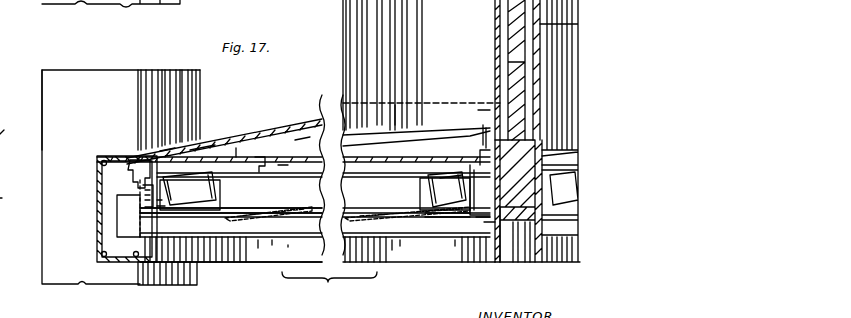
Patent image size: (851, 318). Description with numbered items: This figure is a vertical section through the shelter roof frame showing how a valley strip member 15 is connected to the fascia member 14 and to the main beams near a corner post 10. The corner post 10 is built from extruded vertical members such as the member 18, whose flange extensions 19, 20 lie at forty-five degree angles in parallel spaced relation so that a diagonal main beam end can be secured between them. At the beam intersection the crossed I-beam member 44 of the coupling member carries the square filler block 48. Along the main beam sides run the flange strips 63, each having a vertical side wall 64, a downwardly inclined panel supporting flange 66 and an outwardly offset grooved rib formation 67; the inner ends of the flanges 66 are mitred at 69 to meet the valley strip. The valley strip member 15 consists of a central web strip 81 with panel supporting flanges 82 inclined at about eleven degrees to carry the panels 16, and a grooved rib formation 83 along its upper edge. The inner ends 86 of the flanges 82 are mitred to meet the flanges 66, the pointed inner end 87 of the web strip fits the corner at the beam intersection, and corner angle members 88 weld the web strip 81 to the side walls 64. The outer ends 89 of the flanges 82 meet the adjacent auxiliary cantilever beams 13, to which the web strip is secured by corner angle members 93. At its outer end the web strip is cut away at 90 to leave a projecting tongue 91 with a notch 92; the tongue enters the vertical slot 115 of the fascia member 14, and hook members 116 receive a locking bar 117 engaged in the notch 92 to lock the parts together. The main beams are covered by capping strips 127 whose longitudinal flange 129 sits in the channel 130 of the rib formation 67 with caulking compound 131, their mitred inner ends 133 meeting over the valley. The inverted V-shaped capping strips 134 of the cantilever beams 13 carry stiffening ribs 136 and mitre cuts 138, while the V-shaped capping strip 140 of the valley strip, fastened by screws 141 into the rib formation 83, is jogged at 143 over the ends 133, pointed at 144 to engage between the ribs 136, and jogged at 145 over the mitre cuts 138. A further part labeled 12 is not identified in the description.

The corner post 10 is at (32, 75).
The column 12 is at (489, 15).
The auxiliary cantilever beam 13 is at (222, 275).
The fascia member 14 is at (84, 215).
The valley strip member 15 is at (258, 262).
The panel 16 is at (8, 122).
The extruded vertical member 18 is at (83, 70).
The flange extension 19 is at (186, 70).
The flange extension 20 is at (154, 70).
The I-beam member 44 is at (512, 80).
The square filler block 48 is at (523, 228).
The flange strip 63 is at (465, 228).
The vertical side wall 64 is at (462, 186).
The panel supporting flange 66 is at (478, 232).
The grooved rib formation 67 is at (467, 200).
The mitred inner end 69 is at (444, 220).
The central web strip 81 is at (395, 232).
The panel supporting flange 82 is at (290, 213).
The longitudinally grooved rib formation 83 is at (303, 138).
The inner end of flange 86 is at (420, 204).
The inner end of web strip lower margin 87 is at (486, 222).
The corner angle member 88 is at (427, 191).
The outer end of flange 89 is at (251, 215).
The cut-away corner 90 is at (158, 200).
The projecting tongue 91 is at (119, 221).
The notch 92 is at (143, 195).
The corner angle member 93 is at (203, 190).
The vertical slot 115 is at (157, 285).
The hook member 116 is at (101, 164).
The locking bar 117 is at (138, 189).
The capping strip 127 is at (335, 126).
The longitudinal flange 129 is at (484, 128).
The channel 130 is at (479, 110).
The weather sealing compound 131 is at (482, 125).
The inner end of capping strip 133 is at (432, 150).
The capping strip 134 is at (303, 137).
The stiffening rib 136 is at (165, 150).
The mitre cut 138 is at (198, 158).
The capping strip 140 is at (282, 167).
The screw 141 is at (260, 156).
The jog 143 is at (398, 107).
The pointed outer end 144 is at (198, 150).
The jog 145 is at (240, 155).